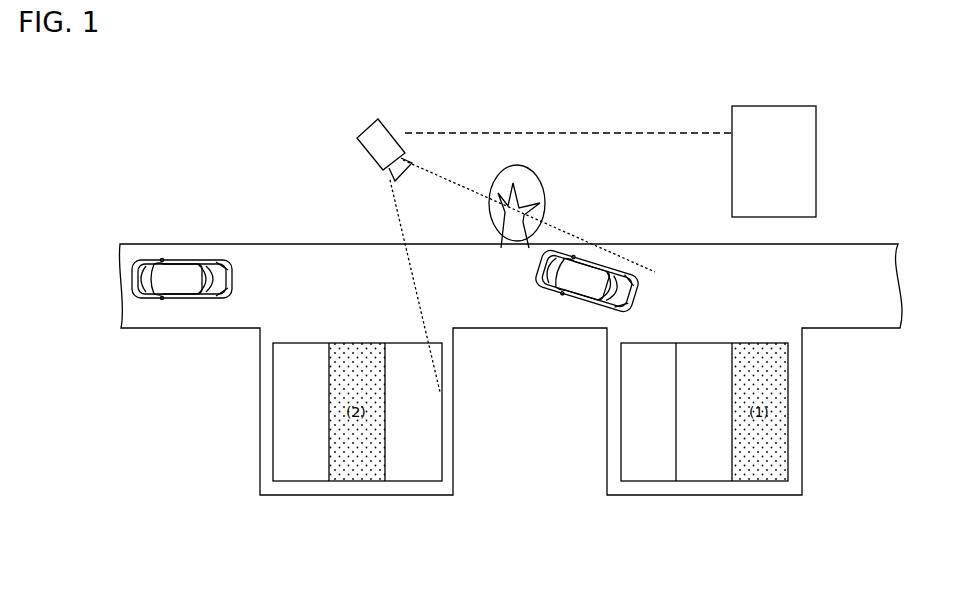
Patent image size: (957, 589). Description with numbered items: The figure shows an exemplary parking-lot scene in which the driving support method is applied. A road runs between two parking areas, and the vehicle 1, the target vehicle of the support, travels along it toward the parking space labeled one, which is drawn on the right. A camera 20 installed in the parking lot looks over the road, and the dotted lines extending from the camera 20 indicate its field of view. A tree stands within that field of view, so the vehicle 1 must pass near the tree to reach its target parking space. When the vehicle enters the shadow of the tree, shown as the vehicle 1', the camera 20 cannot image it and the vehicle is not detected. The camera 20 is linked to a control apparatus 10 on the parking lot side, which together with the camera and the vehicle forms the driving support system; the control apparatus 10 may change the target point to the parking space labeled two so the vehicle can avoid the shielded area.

The vehicle 1 is at (182, 253).
The vehicle in the shadow of the tree 1' is at (587, 304).
The control apparatus 10 is at (787, 106).
The camera 20 is at (365, 130).